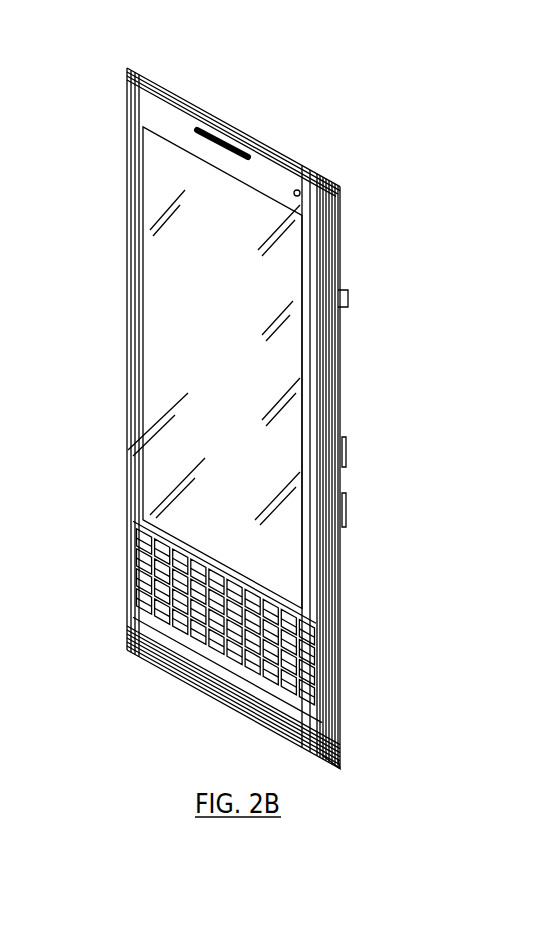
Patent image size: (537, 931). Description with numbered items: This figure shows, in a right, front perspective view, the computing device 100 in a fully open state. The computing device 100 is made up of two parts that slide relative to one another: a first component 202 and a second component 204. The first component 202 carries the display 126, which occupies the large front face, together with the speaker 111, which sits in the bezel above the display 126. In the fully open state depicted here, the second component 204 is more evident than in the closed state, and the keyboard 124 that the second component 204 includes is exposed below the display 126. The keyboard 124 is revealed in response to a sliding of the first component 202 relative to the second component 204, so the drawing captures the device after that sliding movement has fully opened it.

The computing device 100 is at (442, 105).
The speaker 111 is at (228, 140).
The keyboard 124 is at (118, 682).
The display 126 is at (231, 362).
The first component 202 is at (337, 208).
The second component 204 is at (347, 763).